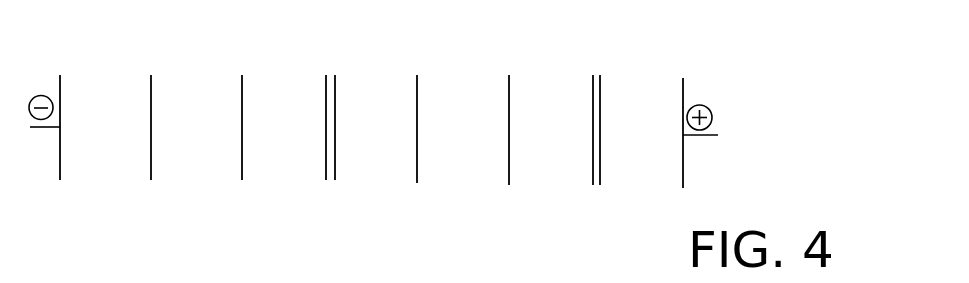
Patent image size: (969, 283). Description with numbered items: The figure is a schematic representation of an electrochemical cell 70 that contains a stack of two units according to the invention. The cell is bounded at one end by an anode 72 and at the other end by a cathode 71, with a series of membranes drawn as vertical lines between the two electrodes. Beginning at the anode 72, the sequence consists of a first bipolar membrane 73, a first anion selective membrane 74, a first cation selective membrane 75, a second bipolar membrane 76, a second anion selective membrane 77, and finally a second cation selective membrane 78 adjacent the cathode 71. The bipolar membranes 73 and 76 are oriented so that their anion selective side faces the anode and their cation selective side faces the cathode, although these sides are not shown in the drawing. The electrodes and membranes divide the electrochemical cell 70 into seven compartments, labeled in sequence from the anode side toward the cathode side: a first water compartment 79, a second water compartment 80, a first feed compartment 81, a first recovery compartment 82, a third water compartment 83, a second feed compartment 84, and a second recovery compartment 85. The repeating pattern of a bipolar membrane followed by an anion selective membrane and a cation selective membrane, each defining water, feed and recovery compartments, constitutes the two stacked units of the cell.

The electrochemical cell 70 is at (697, 31).
The cathode 71 is at (60, 85).
The anode 72 is at (684, 93).
The first bipolar membrane 73 is at (601, 97).
The first anion selective membrane 74 is at (510, 93).
The first cation selective membrane 75 is at (418, 96).
The second bipolar membrane 76 is at (336, 90).
The second anion selective membrane 77 is at (243, 93).
The second cation selective membrane 78 is at (152, 93).
The first water compartment 79 is at (642, 173).
The second water compartment 80 is at (552, 173).
The first feed compartment 81 is at (467, 173).
The first recovery compartment 82 is at (377, 165).
The third water compartment 83 is at (292, 165).
The second feed compartment 84 is at (205, 165).
The second recovery compartment 85 is at (112, 170).